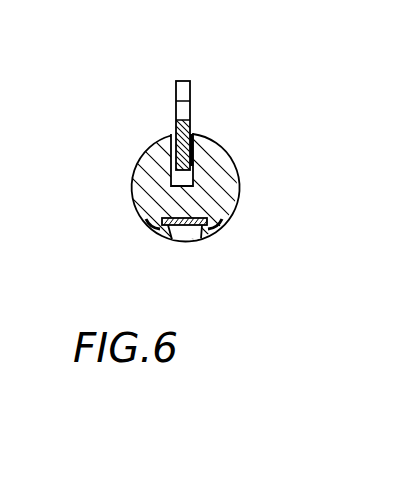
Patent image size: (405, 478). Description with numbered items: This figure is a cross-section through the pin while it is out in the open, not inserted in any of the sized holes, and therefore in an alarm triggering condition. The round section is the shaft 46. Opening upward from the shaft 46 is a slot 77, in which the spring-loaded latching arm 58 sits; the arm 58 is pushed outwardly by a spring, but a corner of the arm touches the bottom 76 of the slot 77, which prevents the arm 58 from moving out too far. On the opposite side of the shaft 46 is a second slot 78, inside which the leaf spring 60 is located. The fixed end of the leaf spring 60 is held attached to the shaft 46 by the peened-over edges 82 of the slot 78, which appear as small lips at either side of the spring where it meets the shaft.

The shaft 46 is at (155, 163).
The spring-loaded latching arm 58 is at (192, 82).
The leaf spring 60 is at (188, 225).
The bottom of slot 76 is at (188, 180).
The slot 77 is at (171, 136).
The slot 78 is at (170, 240).
The peened-over edges 82 is at (215, 232).